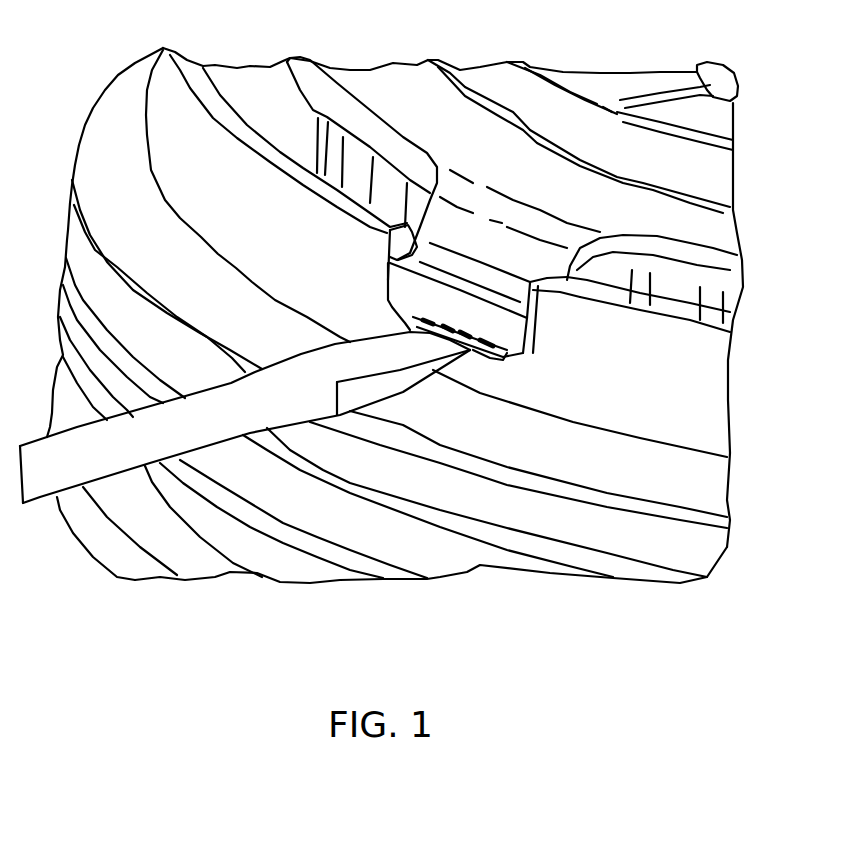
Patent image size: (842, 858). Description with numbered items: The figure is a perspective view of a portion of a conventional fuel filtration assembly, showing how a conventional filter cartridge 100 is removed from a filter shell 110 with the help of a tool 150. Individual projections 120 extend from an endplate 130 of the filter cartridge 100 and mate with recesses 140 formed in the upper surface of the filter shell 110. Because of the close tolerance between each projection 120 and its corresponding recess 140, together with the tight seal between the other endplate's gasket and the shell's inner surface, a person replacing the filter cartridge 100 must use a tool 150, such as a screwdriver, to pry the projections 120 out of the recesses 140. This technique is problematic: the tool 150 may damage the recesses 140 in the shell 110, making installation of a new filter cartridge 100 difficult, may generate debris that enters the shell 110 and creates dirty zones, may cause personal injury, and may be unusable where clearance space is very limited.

The filter cartridge 100 is at (478, 240).
The filter shell 110 is at (697, 407).
The projection 120 is at (413, 288).
The endplate 130 is at (717, 237).
The recess 140 is at (537, 308).
The tool 150 is at (287, 410).